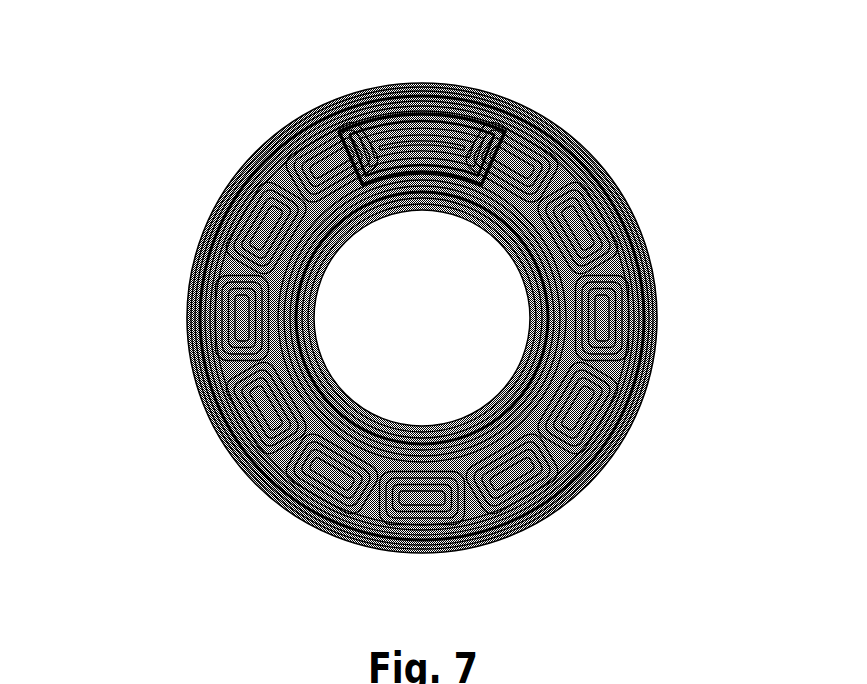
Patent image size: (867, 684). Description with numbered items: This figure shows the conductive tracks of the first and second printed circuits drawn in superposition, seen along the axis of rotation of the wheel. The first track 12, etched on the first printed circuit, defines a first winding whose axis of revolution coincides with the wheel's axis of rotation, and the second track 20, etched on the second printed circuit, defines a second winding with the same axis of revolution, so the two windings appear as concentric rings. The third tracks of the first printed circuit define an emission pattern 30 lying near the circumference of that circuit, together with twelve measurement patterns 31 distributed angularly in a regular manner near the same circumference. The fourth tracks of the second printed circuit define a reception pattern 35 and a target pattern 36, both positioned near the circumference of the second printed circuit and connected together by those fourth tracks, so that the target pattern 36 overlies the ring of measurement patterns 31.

The first track 12 is at (549, 374).
The second track 20 is at (510, 410).
The emission pattern 30 is at (190, 343).
The measurement patterns 31 is at (540, 247).
The reception pattern 35 is at (472, 122).
The target pattern 36 is at (494, 132).